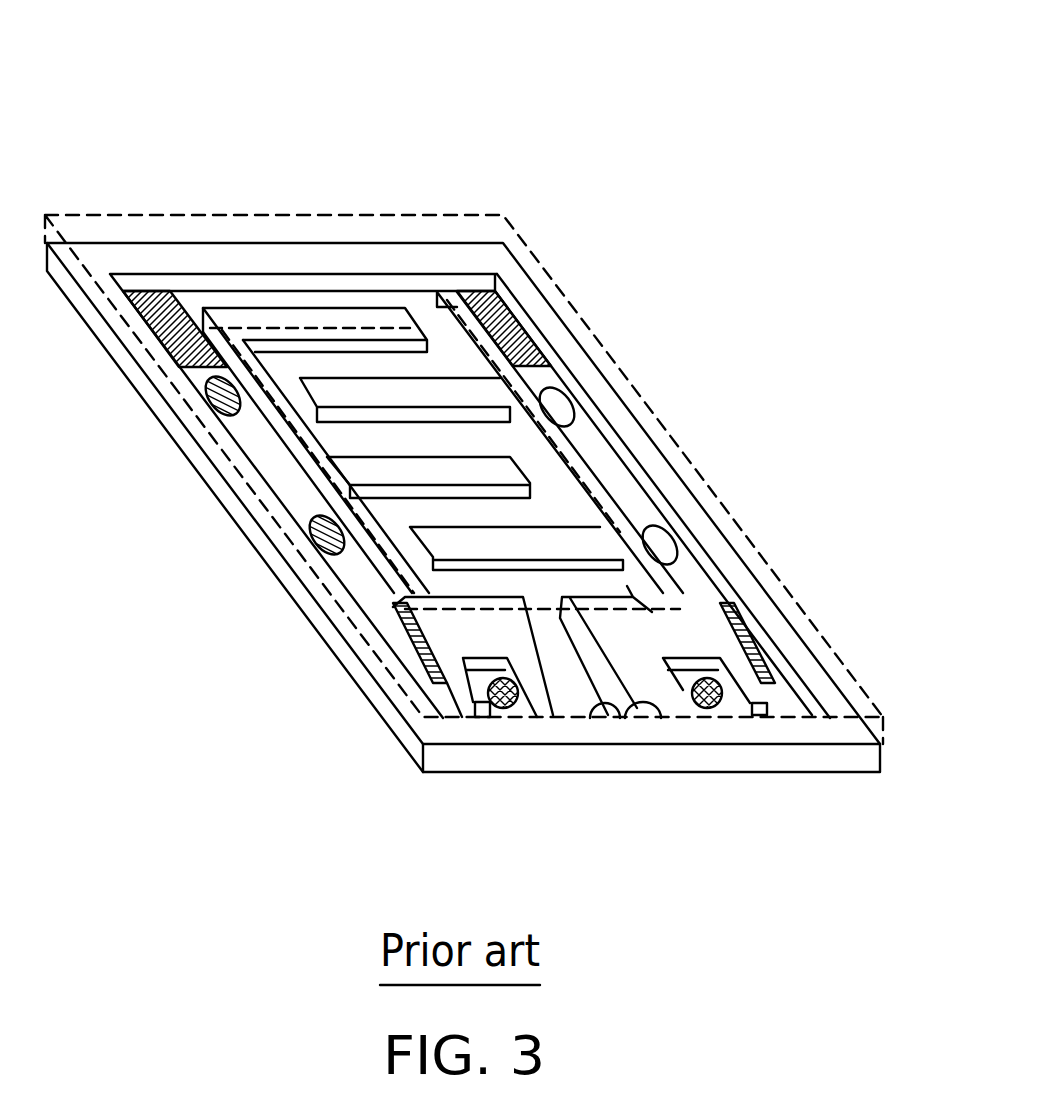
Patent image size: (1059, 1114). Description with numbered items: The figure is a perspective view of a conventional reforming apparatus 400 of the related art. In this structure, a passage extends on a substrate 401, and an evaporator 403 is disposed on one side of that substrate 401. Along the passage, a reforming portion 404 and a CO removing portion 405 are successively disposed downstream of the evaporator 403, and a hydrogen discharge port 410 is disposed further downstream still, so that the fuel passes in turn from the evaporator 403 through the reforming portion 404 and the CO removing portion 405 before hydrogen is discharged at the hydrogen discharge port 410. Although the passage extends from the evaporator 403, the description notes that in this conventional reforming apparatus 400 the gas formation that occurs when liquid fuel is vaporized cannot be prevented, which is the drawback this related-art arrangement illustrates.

The reforming apparatus 400 is at (697, 140).
The substrate 401 is at (253, 543).
The evaporator 403 is at (297, 305).
The reforming portion 404 is at (489, 433).
The CO removing portion 405 is at (577, 587).
The hydrogen discharge port 410 is at (657, 705).